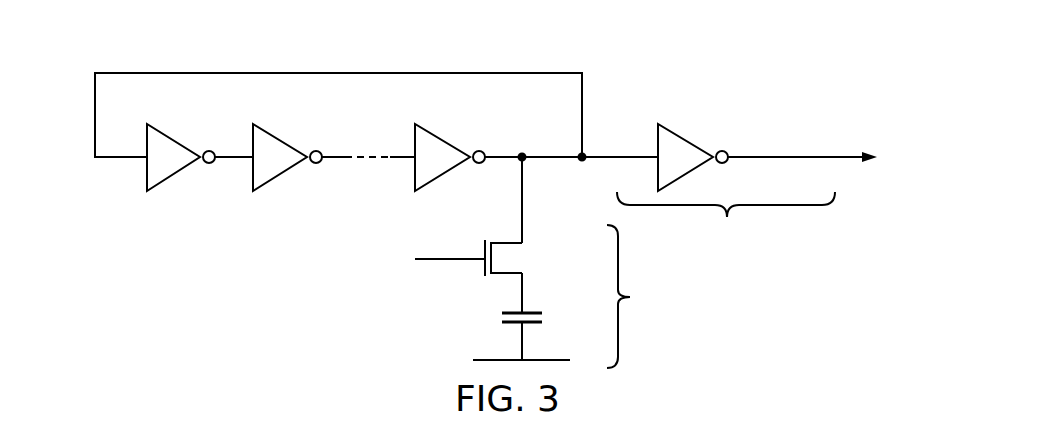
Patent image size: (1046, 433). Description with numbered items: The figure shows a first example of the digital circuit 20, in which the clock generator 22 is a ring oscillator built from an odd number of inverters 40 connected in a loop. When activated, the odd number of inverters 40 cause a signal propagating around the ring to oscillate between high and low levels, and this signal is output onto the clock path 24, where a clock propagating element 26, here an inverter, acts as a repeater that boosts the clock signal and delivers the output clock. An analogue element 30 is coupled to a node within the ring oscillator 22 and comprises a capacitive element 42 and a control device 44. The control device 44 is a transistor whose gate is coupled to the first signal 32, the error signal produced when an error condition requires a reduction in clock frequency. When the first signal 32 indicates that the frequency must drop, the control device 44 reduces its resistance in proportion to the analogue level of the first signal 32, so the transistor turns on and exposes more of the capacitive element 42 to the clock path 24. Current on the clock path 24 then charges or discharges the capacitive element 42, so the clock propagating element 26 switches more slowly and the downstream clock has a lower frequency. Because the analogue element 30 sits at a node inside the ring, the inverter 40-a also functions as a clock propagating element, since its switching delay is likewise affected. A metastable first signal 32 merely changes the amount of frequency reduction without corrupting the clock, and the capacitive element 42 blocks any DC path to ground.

The digital circuit 20 is at (128, 58).
The clock generator 22 is at (358, 123).
The clock path 24 is at (726, 225).
The clock propagating element 26 is at (178, 137).
The analogue element 30 is at (596, 262).
The first signal 32 is at (450, 260).
The inverters 40 is at (282, 175).
The inverter 40-a is at (170, 177).
The capacitive element 42 is at (500, 317).
The control device 44 is at (518, 260).